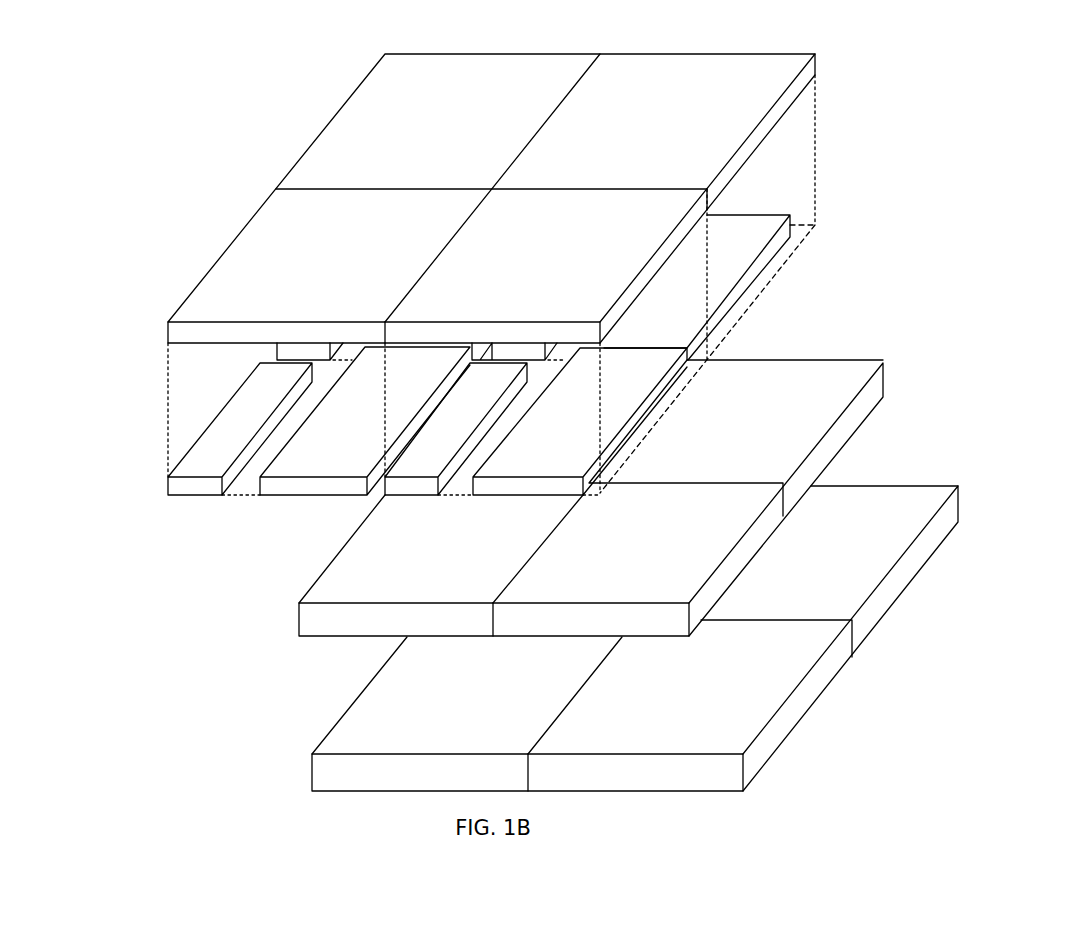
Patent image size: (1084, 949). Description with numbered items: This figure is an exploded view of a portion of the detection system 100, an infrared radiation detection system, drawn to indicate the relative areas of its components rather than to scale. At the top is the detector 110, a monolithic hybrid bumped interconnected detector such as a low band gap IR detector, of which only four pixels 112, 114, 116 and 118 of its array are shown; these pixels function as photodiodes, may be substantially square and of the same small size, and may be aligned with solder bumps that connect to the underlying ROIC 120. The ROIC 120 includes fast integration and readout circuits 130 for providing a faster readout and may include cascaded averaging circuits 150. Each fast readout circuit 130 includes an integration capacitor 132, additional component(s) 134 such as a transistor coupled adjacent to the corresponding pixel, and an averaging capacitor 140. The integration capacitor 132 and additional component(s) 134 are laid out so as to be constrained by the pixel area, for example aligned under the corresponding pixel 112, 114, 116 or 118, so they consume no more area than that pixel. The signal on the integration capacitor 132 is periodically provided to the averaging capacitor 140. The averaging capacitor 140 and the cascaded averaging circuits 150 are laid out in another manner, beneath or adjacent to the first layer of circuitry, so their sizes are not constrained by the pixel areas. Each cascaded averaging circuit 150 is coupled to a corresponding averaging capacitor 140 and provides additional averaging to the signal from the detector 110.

The detection system 100 is at (512, 38).
The detector 110 is at (294, 117).
The pixel 112 is at (525, 282).
The pixel 114 is at (310, 282).
The pixel 116 is at (417, 146).
The pixel 118 is at (635, 146).
The ROIC circuit 120 is at (114, 523).
The fast integration and readout circuit 130 is at (159, 449).
The integration capacitor 132 is at (691, 326).
The additional component(s) 134 is at (209, 442).
The averaging capacitor 140 is at (764, 380).
The cascaded averaging circuit 150 is at (601, 709).